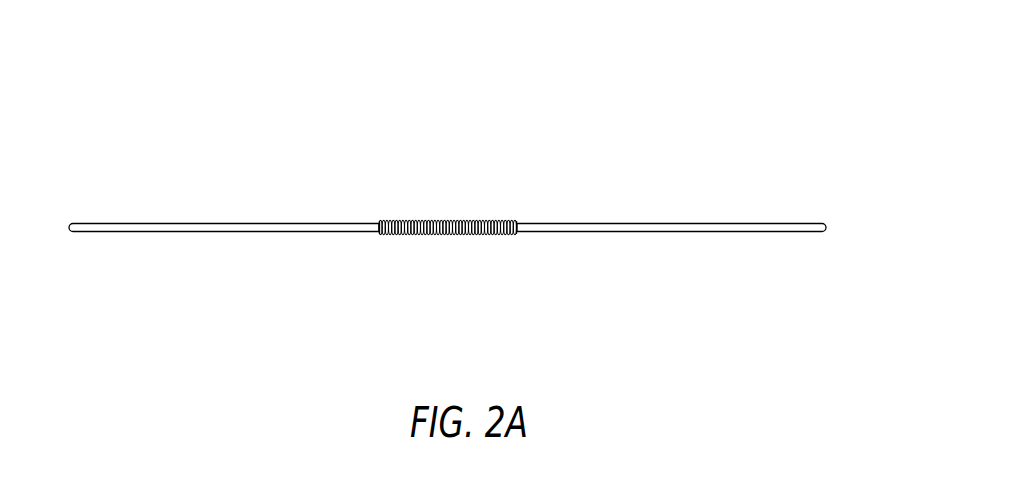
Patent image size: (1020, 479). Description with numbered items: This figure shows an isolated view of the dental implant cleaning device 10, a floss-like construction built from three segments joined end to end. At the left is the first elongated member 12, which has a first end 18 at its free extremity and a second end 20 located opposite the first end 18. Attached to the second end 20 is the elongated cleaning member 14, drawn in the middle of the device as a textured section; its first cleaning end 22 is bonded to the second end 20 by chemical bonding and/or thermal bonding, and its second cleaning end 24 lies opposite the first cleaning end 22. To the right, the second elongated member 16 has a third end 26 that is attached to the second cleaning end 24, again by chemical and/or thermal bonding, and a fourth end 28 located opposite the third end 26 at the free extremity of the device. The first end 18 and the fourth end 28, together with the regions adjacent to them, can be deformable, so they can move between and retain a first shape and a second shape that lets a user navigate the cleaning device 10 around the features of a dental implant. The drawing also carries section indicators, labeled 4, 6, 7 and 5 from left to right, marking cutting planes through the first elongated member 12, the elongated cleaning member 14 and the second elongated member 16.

The dental implant cleaning device 10 is at (73, 157).
The first elongated member 12 is at (313, 222).
The elongated cleaning member 14 is at (503, 220).
The second elongated member 16 is at (680, 235).
The first end 18 is at (77, 223).
The second end 20 is at (372, 237).
The first cleaning end 22 is at (388, 214).
The second cleaning end 24 is at (515, 214).
The third end 26 is at (517, 239).
The fourth end 28 is at (817, 238).
The section line 4- 4 is at (72, 274).
The section line 5- 5 is at (823, 272).
The section line 6- 6 is at (192, 272).
The section line 7- 7 is at (446, 272).